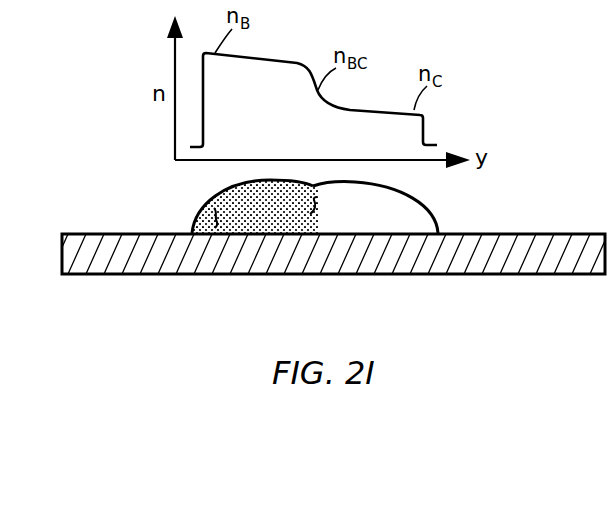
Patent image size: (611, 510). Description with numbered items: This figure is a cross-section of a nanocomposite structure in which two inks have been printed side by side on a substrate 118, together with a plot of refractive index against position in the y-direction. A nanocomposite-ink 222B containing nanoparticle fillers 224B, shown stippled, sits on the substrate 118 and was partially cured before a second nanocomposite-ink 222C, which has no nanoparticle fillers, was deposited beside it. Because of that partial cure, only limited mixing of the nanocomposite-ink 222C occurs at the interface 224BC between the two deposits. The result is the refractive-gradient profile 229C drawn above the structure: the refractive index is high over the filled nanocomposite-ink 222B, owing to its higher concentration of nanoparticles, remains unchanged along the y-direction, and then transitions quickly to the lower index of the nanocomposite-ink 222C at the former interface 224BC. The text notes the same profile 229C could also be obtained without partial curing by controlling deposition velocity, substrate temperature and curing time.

The substrate 118 is at (353, 275).
The nanocomposite-ink 222B is at (194, 214).
The nanocomposite-ink 222C is at (431, 203).
The nanoparticle fillers 224B is at (191, 229).
The interface 224BC is at (310, 214).
The refractive-gradient profile 229C is at (278, 62).